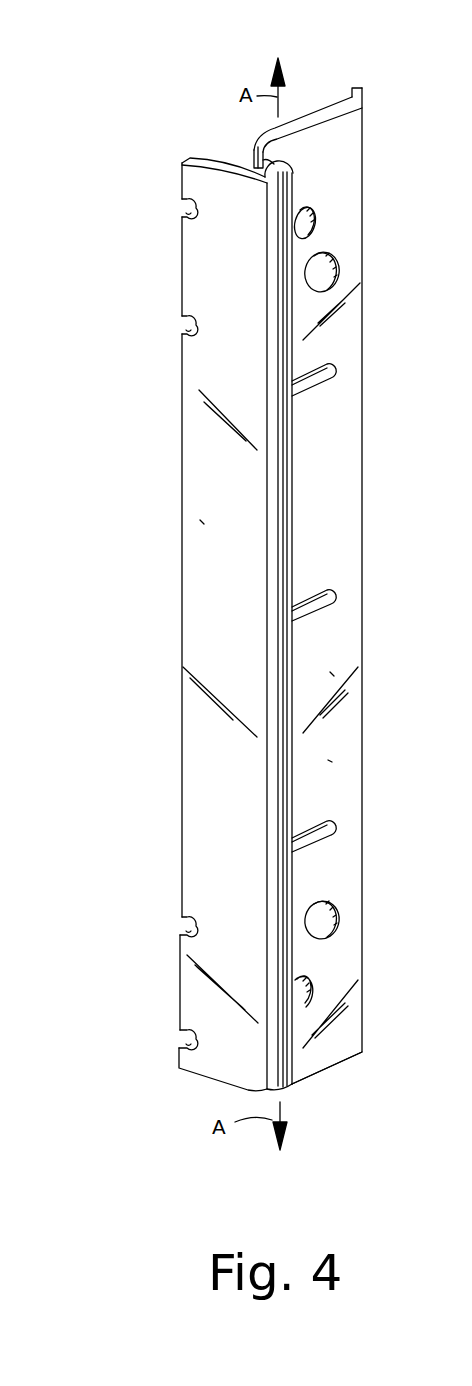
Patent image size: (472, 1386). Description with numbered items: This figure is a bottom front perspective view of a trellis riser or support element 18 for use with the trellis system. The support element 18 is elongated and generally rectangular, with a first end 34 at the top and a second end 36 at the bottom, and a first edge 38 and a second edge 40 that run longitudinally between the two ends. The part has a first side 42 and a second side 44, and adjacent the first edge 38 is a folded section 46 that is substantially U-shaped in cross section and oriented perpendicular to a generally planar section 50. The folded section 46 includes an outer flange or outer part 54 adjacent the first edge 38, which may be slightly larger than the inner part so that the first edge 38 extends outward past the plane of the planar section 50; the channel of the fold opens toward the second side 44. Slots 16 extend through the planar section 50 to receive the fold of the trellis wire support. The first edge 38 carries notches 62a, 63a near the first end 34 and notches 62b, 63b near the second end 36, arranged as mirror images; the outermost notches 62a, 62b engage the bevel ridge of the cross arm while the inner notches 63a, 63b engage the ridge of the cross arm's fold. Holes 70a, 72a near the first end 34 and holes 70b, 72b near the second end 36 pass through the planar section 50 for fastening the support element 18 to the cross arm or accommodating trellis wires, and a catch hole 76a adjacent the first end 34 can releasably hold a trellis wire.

The slots 16 is at (333, 374).
The support element 18 is at (135, 114).
The first end 34 is at (297, 118).
The second end 36 is at (317, 1070).
The first edge 38 is at (181, 166).
The second edge 40 is at (362, 86).
The first side 42 is at (327, 667).
The second side 44 is at (212, 112).
The folded section 46 is at (284, 550).
The planar section 50 is at (325, 758).
The outer part 54 is at (212, 513).
The notch 62a is at (183, 208).
The notch 62b is at (183, 1042).
The notch 63a is at (185, 325).
The notch 63b is at (182, 932).
The hole 70a is at (310, 212).
The hole 70b is at (308, 993).
The opening 72a is at (339, 272).
The opening 72b is at (338, 920).
The catch hole 76a is at (300, 143).